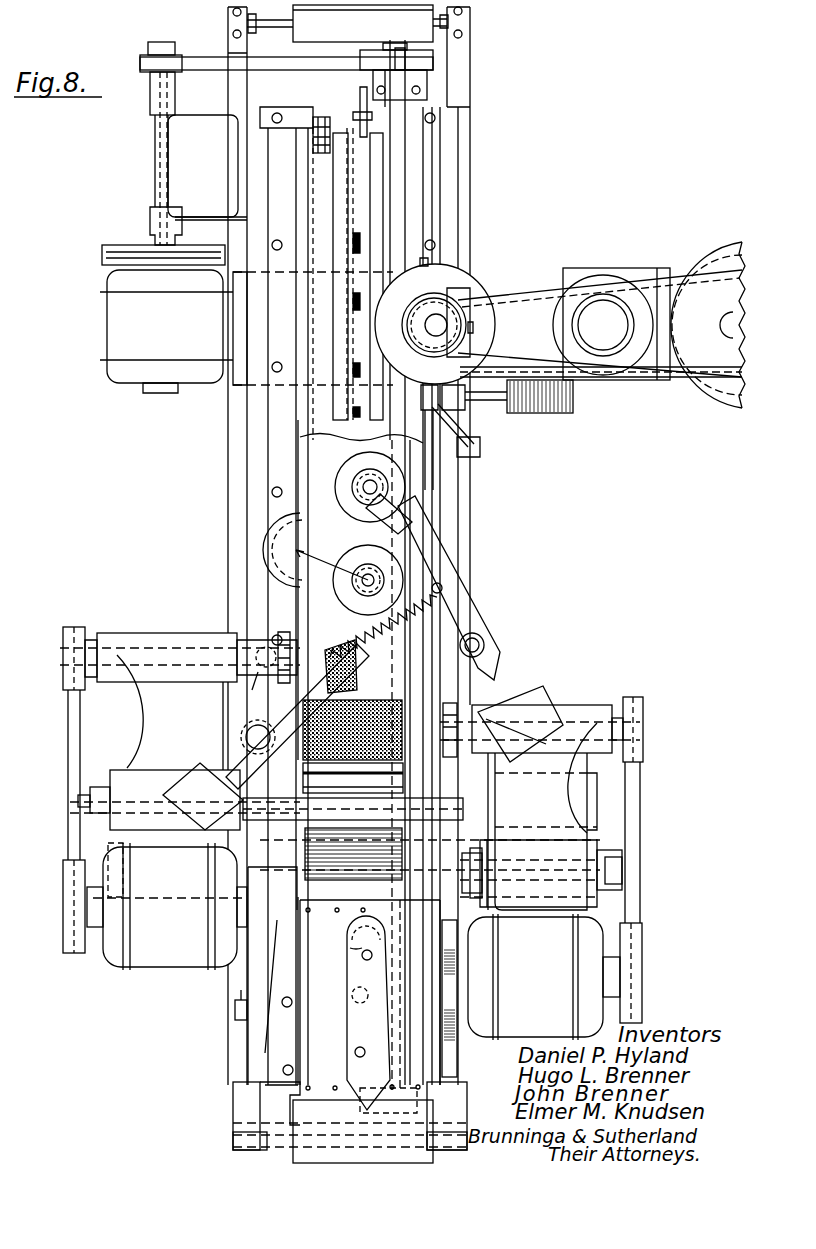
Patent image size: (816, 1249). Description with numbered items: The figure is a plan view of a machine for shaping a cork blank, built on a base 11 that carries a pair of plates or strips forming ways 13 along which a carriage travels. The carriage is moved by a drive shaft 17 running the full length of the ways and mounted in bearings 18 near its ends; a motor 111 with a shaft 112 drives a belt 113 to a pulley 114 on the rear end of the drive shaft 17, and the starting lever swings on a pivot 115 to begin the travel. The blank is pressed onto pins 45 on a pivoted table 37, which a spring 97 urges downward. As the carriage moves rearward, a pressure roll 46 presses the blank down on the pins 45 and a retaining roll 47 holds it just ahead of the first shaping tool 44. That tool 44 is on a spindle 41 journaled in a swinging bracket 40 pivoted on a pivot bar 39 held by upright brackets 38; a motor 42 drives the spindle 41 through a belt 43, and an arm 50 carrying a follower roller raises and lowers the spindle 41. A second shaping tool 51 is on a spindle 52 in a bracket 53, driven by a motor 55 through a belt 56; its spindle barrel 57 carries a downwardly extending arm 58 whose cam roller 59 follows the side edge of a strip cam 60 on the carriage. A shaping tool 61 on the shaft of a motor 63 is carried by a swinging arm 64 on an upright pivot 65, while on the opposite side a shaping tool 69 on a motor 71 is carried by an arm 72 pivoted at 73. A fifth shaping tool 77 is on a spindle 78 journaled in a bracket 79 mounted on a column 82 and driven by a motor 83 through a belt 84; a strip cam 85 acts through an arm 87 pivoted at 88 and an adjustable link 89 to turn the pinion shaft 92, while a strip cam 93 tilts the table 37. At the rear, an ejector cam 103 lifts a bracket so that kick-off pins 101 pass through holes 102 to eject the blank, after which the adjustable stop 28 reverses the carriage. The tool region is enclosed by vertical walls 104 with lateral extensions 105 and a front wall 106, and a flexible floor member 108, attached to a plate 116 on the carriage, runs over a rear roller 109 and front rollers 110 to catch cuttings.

The base 11 is at (638, 380).
The plates or strips forming ways 13 is at (280, 155).
The drive shaft 17 is at (397, 132).
The bearings 18 is at (390, 86).
The adjustable stop 28 is at (318, 155).
The table 37 is at (355, 1033).
The upright brackets 38 is at (588, 832).
The pivot bar 39 is at (540, 880).
The swinging bracket 40 is at (570, 816).
The spindle 41 is at (580, 710).
The motor 42 is at (515, 1025).
The belt 43 is at (634, 858).
The shaping tool 44 is at (380, 705).
The pins or spikes 45 is at (372, 985).
The pressure roll 46 is at (315, 860).
The retaining roll 47 is at (350, 782).
The arm 50 is at (452, 714).
The second shaping tool 51 is at (348, 682).
The spindle 52 is at (170, 642).
The bracket 53 is at (135, 712).
The motor 55 is at (166, 960).
The belt 56 is at (72, 780).
The spindle barrel 57 is at (255, 642).
The downwardly extending arm 58 is at (342, 648).
The cam roller 59 is at (248, 686).
The cam 60 is at (277, 945).
The shaping tool 61 is at (352, 578).
The motor 63 is at (358, 558).
The swinging arm 64 is at (333, 618).
The upright pivot 65 is at (300, 722).
The shaping tool 69 is at (355, 500).
The motor 71 is at (352, 472).
The arm 72 is at (460, 586).
The pivot 73 is at (480, 642).
The fifth shaping tool 77 is at (448, 280).
The spindle 78 is at (436, 316).
The bracket 79 is at (625, 300).
The column 82 is at (575, 325).
The motor 83 is at (700, 265).
The belt 84 is at (520, 290).
The strip cam 85 is at (438, 352).
The arm 87 is at (485, 418).
The pivot 88 is at (475, 325).
The adjustable link 89 is at (475, 457).
The pinion shaft 92 is at (472, 370).
The strip cam 93 is at (355, 398).
The spring 97 is at (368, 1088).
The kick-off pins 101 is at (345, 1078).
The holes 102 is at (362, 957).
The ejector cam 103 is at (362, 135).
The vertical walls 104 is at (300, 437).
The lateral extensions 105 is at (262, 543).
The front wall 106 is at (430, 800).
The flexible closure or floor member 108 is at (365, 437).
The roller 109 is at (420, 30).
The front rollers 110 is at (300, 1130).
The motor 111 is at (173, 331).
The shaft 112 is at (163, 145).
The belt 113 is at (282, 60).
The pulley 114 is at (425, 75).
The pivot 115 is at (235, 1010).
The plate 116 is at (305, 1020).